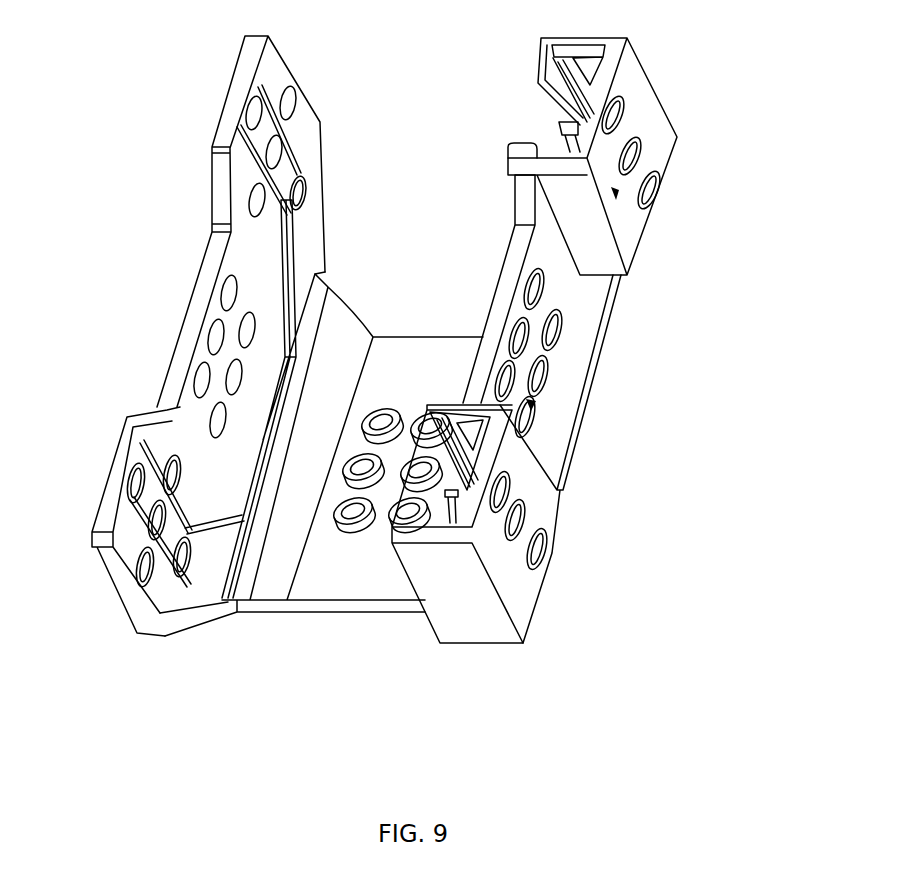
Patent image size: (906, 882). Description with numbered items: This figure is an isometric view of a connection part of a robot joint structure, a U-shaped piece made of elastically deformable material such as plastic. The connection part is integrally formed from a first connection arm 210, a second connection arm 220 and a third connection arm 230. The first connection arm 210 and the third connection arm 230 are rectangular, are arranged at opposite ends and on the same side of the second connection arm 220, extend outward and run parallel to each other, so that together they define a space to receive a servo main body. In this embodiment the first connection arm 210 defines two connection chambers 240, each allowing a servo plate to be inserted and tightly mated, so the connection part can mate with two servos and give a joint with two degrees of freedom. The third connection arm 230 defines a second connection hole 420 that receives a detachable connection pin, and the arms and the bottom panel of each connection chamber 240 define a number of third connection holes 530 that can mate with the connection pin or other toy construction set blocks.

The first connection arm 210 is at (573, 320).
The second connection arm 220 is at (390, 605).
The third connection arm 230 is at (188, 437).
The connection chamber 240 is at (637, 213).
The second connection hole 420 is at (123, 605).
The third connection hole 530 is at (207, 333).